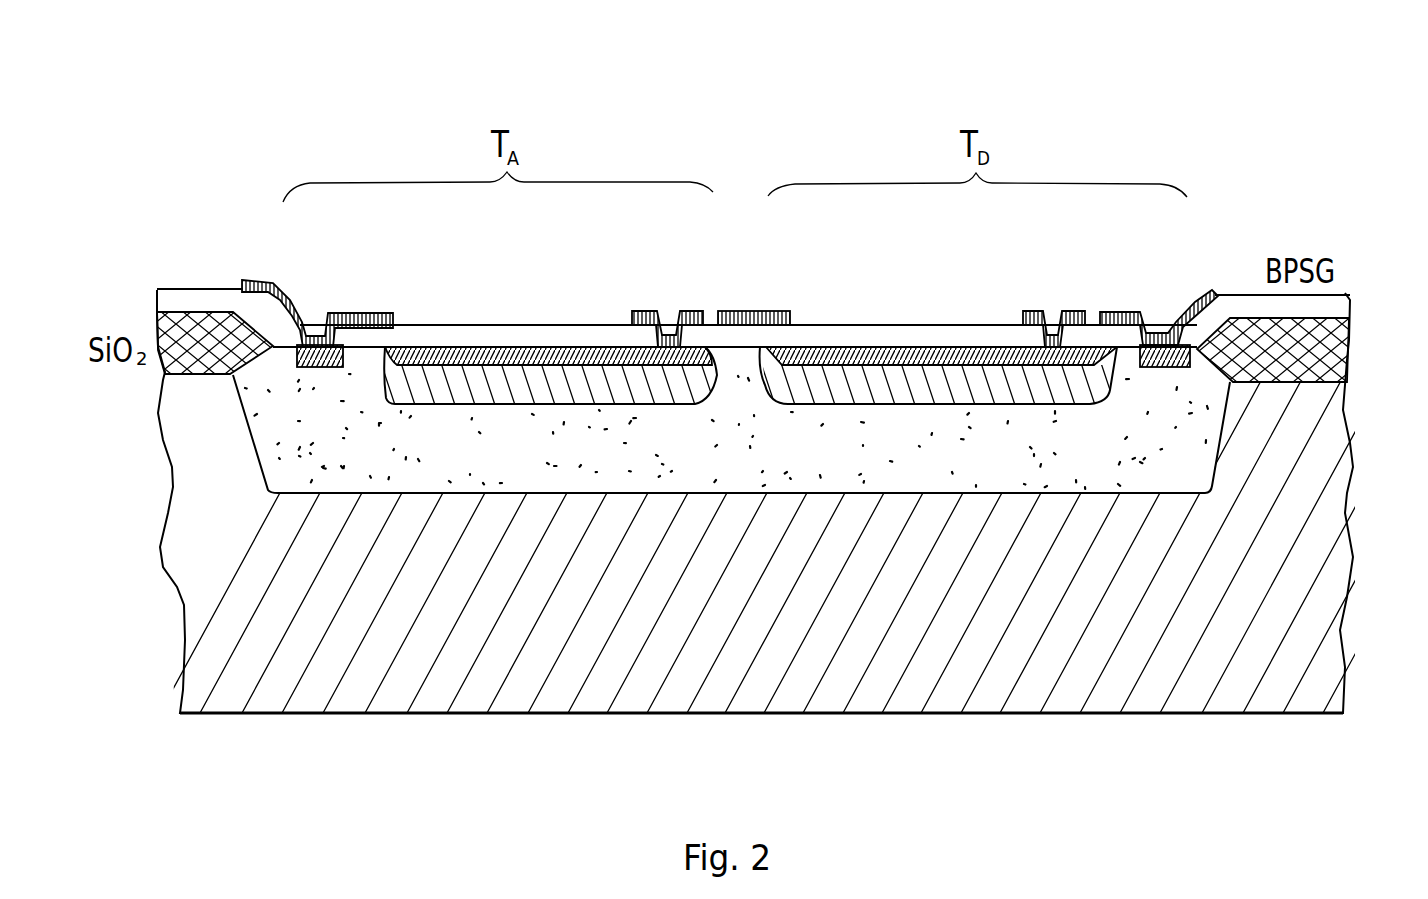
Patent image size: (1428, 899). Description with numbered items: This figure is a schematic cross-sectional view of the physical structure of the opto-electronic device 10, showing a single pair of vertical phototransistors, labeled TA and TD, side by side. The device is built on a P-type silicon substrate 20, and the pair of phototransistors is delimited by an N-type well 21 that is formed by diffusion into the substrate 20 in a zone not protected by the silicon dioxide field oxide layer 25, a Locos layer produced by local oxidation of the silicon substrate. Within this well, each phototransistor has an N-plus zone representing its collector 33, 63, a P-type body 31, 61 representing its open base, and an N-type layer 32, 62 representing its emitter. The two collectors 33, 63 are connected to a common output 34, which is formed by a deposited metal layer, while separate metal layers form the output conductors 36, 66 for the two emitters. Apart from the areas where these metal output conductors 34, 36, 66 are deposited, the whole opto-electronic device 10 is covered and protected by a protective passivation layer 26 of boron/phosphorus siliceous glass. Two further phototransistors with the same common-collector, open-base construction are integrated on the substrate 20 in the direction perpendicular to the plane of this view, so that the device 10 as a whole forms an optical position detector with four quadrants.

The opto-electronic device 10 is at (739, 113).
The P-type silicon substrate 20 is at (1062, 715).
The N-type well 21 is at (1212, 483).
The SiO2 field oxide layer 25 is at (1349, 342).
The protective passivation layer 26 is at (207, 289).
The P-type body 31 is at (413, 398).
The N-type layer 32 is at (500, 347).
The collector 33 is at (343, 367).
The common output 34 is at (305, 315).
The emitter output conductor 36 is at (652, 311).
The P-type body 61 is at (1107, 390).
The N-type layer 62 is at (908, 347).
The collector 63 is at (1178, 368).
The emitter output conductor 66 is at (1040, 311).